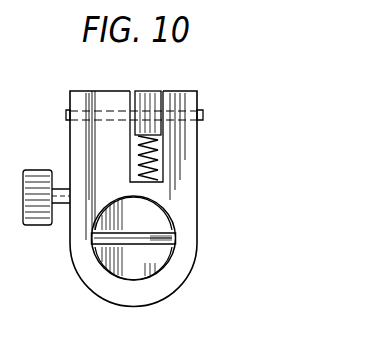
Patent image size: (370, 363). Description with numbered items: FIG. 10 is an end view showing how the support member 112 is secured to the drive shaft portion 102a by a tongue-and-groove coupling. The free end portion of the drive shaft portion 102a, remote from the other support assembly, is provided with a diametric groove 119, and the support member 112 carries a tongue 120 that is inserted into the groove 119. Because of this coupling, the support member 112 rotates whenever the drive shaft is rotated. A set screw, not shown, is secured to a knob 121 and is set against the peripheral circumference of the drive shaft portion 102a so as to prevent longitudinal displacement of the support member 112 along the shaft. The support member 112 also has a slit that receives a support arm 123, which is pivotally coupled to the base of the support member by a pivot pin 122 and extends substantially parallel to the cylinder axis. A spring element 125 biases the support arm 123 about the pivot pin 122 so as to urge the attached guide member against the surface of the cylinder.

The support member 112 is at (190, 185).
The diametric groove 119 is at (172, 258).
The tongue 120 is at (172, 240).
The knob 121 is at (37, 226).
The pivot pin 122 is at (203, 114).
The support arm 123 is at (153, 92).
The spring element 125 is at (138, 177).
The drive shaft portion 102a is at (110, 273).